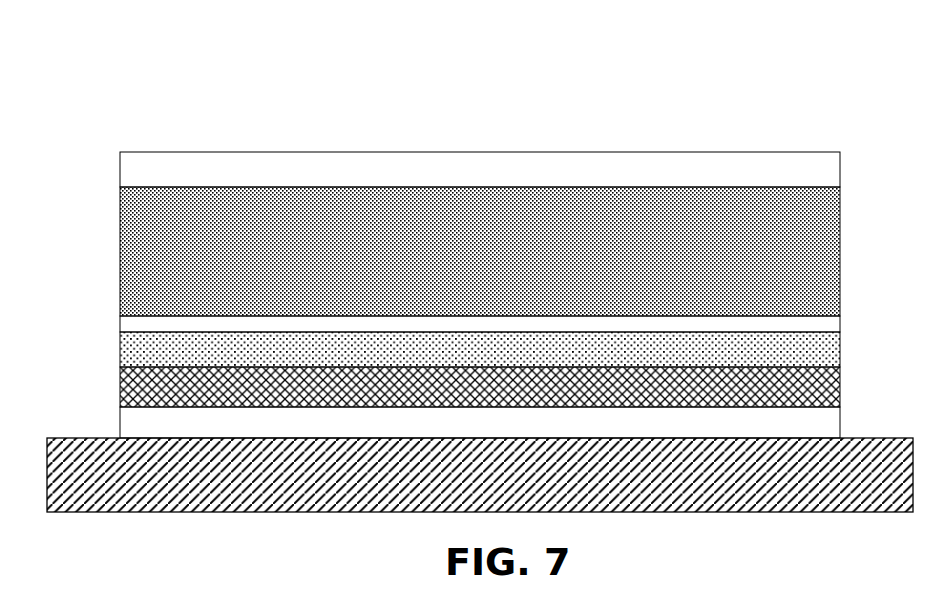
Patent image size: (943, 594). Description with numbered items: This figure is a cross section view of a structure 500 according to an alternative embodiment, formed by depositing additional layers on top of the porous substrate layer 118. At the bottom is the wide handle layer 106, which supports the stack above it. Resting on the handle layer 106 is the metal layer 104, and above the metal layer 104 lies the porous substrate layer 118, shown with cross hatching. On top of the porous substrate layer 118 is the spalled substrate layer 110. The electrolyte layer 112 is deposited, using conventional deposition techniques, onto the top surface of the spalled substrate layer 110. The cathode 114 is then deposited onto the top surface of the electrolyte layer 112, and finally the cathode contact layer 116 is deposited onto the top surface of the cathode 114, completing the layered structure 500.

The structure 500 is at (101, 54).
The cathode contact layer 116 is at (826, 182).
The cathode 114 is at (826, 292).
The electrolyte layer 112 is at (138, 323).
The spalled substrate layer 110 is at (826, 362).
The porous substrate layer 118 is at (826, 400).
The metal layer 104 is at (826, 435).
The handle layer 106 is at (891, 492).